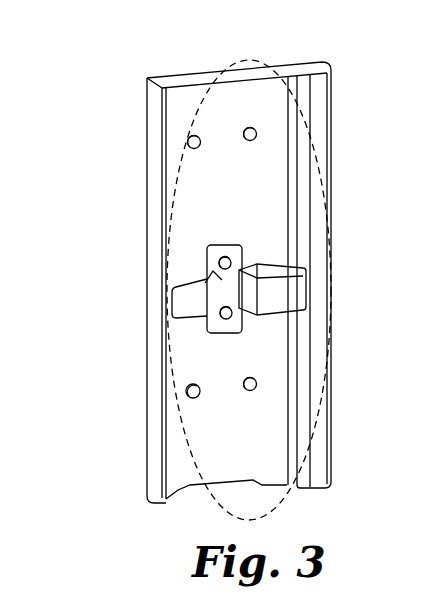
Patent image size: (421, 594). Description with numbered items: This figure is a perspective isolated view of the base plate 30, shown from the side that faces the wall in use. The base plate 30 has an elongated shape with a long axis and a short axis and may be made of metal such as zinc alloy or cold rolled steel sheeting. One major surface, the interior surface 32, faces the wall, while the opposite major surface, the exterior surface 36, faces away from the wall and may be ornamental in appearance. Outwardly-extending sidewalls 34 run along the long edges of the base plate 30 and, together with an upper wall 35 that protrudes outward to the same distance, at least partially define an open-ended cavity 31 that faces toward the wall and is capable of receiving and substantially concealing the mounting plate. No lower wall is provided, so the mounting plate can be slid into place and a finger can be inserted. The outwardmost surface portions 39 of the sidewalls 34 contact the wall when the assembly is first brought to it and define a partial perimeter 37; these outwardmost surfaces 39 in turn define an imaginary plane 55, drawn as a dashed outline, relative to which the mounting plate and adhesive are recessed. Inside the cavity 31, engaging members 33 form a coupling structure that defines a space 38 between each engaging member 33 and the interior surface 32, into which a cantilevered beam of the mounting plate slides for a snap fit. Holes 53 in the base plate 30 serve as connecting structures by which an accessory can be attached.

The base plate 30 is at (96, 83).
The open-ended cavity 31 is at (267, 176).
The interior surface 32 is at (183, 213).
The engaging member 33 is at (300, 286).
The sidewalls 34 is at (318, 98).
The upper wall 35 is at (188, 79).
The exterior surface 36 is at (132, 170).
The partial perimeter 37 is at (330, 452).
The space 38 is at (271, 254).
The outwardmost surface portions 39 is at (170, 432).
The holes 53 is at (247, 390).
The imaginary plane 55 is at (278, 511).